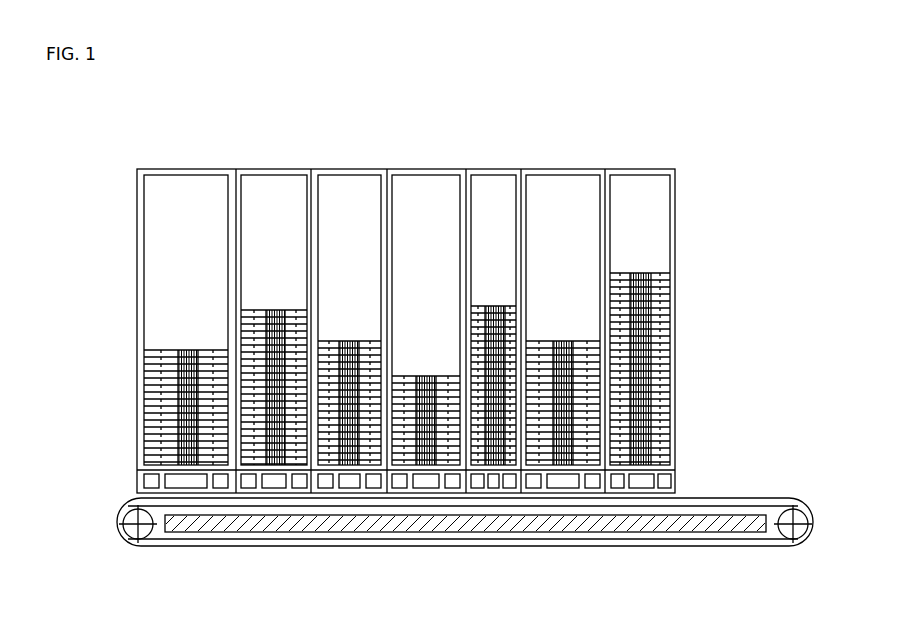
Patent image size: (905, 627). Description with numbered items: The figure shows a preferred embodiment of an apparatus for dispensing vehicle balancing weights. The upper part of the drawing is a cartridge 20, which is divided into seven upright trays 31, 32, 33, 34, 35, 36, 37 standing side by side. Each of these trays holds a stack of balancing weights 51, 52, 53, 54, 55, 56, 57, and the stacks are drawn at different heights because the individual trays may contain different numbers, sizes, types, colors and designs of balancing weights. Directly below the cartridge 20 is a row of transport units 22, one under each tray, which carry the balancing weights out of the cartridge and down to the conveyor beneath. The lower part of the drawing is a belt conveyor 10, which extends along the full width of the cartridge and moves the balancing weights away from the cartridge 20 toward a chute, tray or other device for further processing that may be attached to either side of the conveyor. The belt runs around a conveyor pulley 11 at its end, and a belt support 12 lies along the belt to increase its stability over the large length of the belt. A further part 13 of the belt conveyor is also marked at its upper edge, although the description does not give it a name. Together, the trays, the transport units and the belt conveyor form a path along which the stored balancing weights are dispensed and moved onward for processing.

The belt conveyor 10 is at (765, 539).
The conveyor pulley 11 is at (792, 500).
The belt support 12 is at (457, 522).
The conveyor frame 13 is at (767, 497).
The cartridge 20 is at (710, 174).
The transport unit 22 is at (693, 468).
The tray 31 is at (638, 185).
The tray 32 is at (556, 185).
The tray 33 is at (488, 185).
The tray 34 is at (418, 185).
The tray 35 is at (341, 185).
The tray 36 is at (268, 185).
The tray 37 is at (179, 185).
The balancing weights 51 is at (635, 264).
The balancing weights 52 is at (558, 332).
The balancing weights 53 is at (489, 297).
The balancing weights 54 is at (418, 367).
The balancing weights 55 is at (342, 332).
The balancing weights 56 is at (268, 301).
The balancing weights 57 is at (180, 341).